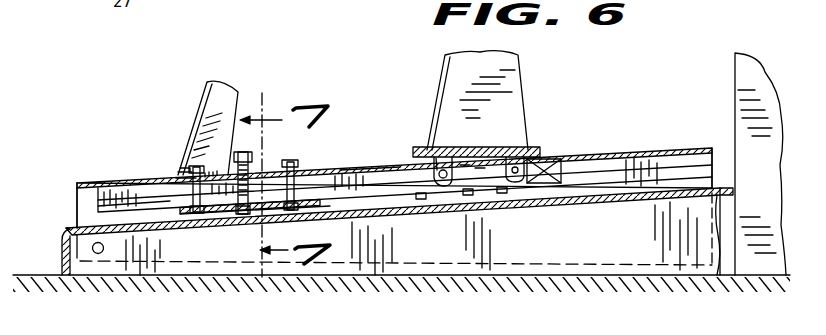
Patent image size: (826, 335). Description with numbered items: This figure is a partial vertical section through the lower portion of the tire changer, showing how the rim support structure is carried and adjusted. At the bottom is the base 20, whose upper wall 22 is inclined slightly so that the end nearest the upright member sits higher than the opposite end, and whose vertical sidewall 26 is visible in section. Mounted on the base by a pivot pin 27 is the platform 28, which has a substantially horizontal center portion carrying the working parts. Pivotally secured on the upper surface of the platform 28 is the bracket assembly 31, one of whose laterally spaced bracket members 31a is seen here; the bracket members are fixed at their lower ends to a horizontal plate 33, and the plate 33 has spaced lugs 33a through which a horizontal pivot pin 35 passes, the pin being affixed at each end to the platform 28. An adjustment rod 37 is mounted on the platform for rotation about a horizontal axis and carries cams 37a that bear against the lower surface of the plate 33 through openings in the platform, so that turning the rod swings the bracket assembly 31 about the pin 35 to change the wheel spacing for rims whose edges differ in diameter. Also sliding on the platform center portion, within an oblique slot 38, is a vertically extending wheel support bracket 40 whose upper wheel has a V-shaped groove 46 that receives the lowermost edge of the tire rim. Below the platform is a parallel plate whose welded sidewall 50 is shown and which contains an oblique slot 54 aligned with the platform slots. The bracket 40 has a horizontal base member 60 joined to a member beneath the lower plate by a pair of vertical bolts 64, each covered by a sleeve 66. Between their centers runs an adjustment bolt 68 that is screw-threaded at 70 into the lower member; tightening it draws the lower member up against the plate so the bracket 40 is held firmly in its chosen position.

The base 20 is at (112, 178).
The upper wall 22 is at (148, 217).
The sidewall 26 is at (576, 249).
The pivot pin 27 is at (98, 254).
The platform 28 is at (77, 183).
The bracket assembly 31 is at (525, 108).
The bracket member 31a is at (453, 80).
The horizontal plate 33 is at (506, 150).
The lug 33a is at (550, 160).
The pivot pin 35 is at (507, 194).
The adjustment rod 37 is at (442, 187).
The cam 37a is at (440, 140).
The slot 38 is at (340, 170).
The wheel support bracket 40 is at (205, 96).
The groove 46 is at (117, 222).
The sidewall 50 is at (367, 170).
The slot 54 is at (385, 208).
The base member 60 is at (180, 170).
The bolt 64 is at (187, 214).
The sleeve 66 is at (173, 215).
The adjustment bolt 68 is at (237, 214).
The screw thread 70 is at (233, 217).